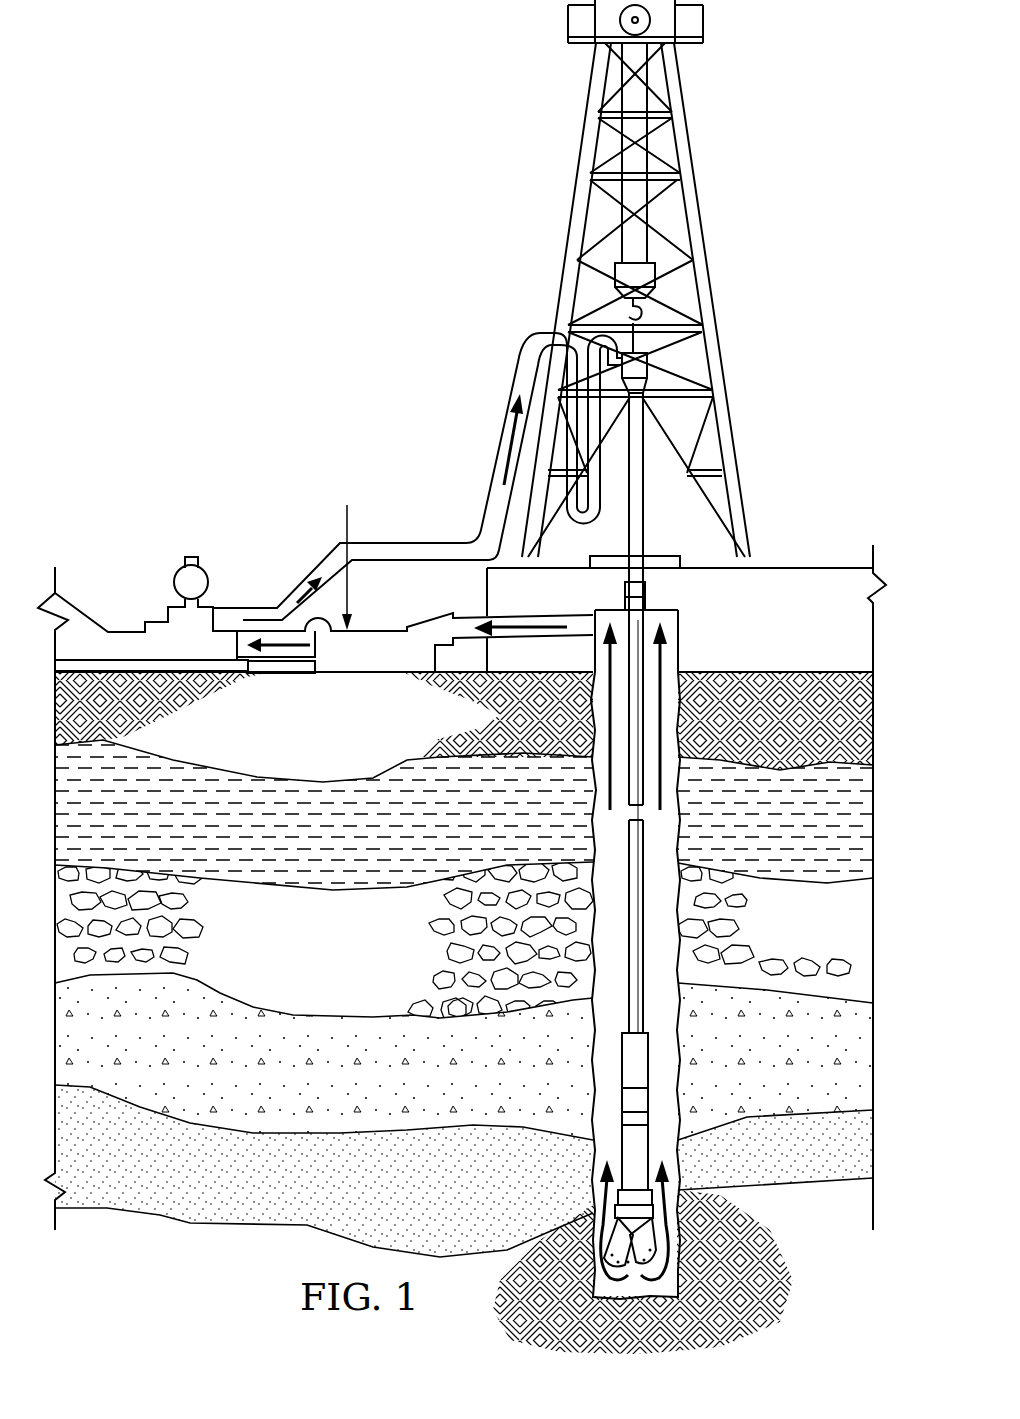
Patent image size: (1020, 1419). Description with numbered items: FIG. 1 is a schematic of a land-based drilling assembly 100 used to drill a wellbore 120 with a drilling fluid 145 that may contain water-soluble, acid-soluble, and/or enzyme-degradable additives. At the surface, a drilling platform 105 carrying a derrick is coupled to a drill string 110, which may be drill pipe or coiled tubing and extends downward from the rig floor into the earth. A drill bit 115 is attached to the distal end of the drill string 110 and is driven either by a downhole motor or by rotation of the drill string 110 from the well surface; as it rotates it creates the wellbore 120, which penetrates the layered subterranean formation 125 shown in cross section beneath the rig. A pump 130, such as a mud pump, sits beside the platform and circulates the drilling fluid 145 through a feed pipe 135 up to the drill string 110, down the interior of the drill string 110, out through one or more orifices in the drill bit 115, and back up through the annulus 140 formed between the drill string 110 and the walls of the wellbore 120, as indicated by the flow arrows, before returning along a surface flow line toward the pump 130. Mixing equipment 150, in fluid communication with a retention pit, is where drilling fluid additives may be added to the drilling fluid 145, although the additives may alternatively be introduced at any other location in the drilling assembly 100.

The drilling assembly 100 is at (497, 208).
The drilling platform 105 is at (773, 542).
The drill string 110 is at (652, 593).
The drill bit 115 is at (650, 1245).
The wellbore 120 is at (680, 1066).
The subterranean formation 125 is at (170, 1255).
The pump 130 is at (160, 600).
The feed pipe 135 is at (412, 544).
The annulus 140 is at (663, 920).
The drilling fluid 145 is at (292, 604).
The mixing equipment 150 is at (345, 525).